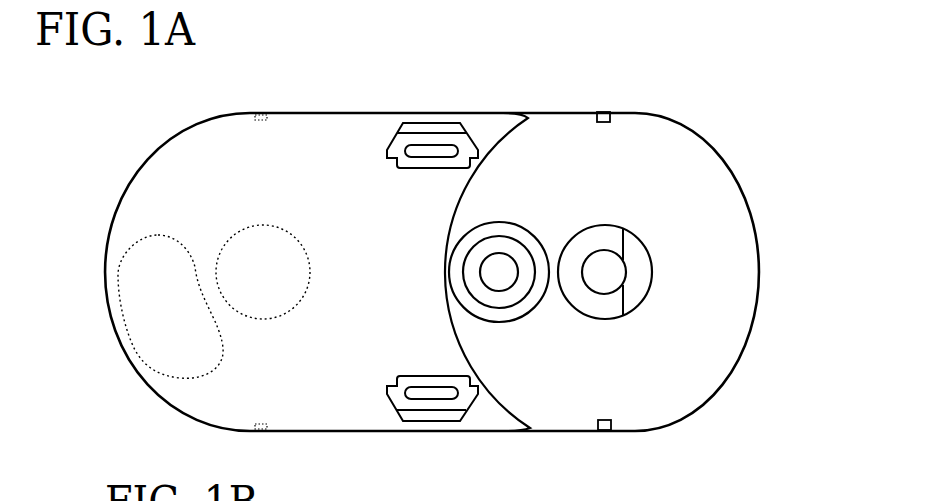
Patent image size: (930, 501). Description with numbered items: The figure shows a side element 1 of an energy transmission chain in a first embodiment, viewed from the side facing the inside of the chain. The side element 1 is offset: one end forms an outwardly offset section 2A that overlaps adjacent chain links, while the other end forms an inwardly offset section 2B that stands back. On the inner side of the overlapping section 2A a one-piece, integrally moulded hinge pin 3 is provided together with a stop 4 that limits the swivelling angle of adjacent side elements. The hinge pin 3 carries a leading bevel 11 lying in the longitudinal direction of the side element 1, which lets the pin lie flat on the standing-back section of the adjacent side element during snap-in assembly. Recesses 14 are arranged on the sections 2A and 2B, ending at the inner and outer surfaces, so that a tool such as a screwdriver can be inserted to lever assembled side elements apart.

The side element 1 is at (457, 264).
The outwardly offset section 2A is at (705, 173).
The inwardly offset section 2B is at (175, 170).
The hinge pin 3 is at (619, 245).
The stop 4 is at (500, 265).
The leading bevel 11 is at (635, 262).
The recesses 14 is at (604, 110).